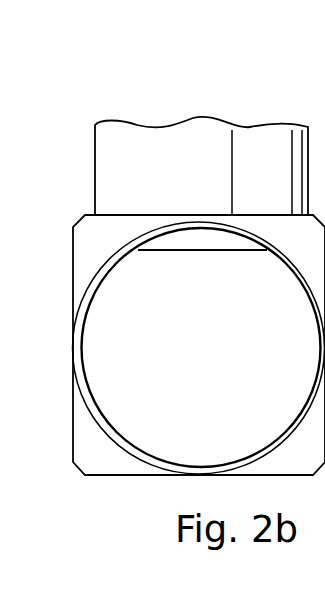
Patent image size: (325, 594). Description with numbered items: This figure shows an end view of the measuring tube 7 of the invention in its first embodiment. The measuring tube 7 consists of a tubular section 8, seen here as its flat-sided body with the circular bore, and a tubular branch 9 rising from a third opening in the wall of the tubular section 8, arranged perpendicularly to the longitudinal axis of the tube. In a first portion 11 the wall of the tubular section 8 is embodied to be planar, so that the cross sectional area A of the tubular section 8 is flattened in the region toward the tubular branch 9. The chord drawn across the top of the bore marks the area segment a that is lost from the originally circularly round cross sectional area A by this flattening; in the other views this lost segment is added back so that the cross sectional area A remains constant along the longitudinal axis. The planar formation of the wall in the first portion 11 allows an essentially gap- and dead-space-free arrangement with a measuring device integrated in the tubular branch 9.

The measuring tube 7 is at (128, 107).
The tubular branch 9 is at (92, 170).
The tubular section 8 is at (132, 485).
The first portion 11 is at (120, 262).
The area segment a is at (207, 238).
The cross sectional area A is at (205, 440).